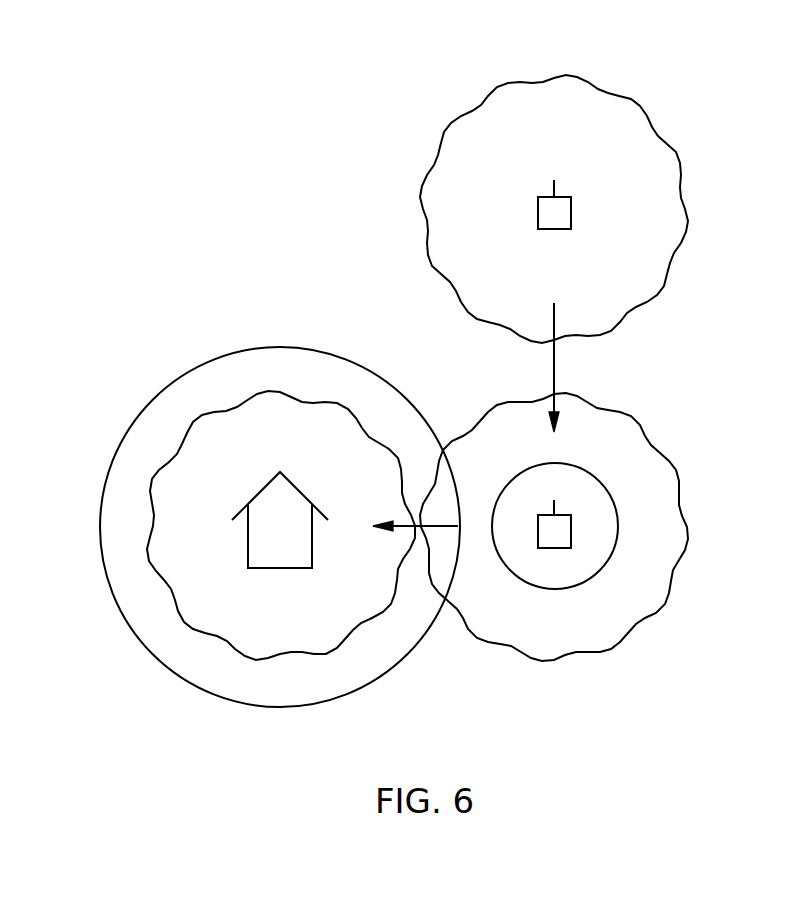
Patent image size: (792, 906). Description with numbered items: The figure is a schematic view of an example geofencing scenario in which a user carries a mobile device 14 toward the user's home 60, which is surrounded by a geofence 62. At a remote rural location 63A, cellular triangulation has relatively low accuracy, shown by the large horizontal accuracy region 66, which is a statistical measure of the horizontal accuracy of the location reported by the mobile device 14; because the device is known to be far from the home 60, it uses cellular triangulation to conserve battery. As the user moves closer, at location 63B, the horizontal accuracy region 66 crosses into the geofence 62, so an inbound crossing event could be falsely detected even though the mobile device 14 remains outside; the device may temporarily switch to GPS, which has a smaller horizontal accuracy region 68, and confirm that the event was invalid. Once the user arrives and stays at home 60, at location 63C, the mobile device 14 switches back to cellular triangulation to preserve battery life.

The mobile device 14 is at (571, 213).
The user's home 60 is at (266, 545).
The geofence 62 is at (187, 375).
The rural location 63A is at (689, 68).
The location closer to home 63B is at (637, 491).
The location at home 63C is at (280, 478).
The horizontal accuracy region 66 is at (670, 138).
The smaller horizontal accuracy region 68 is at (598, 573).